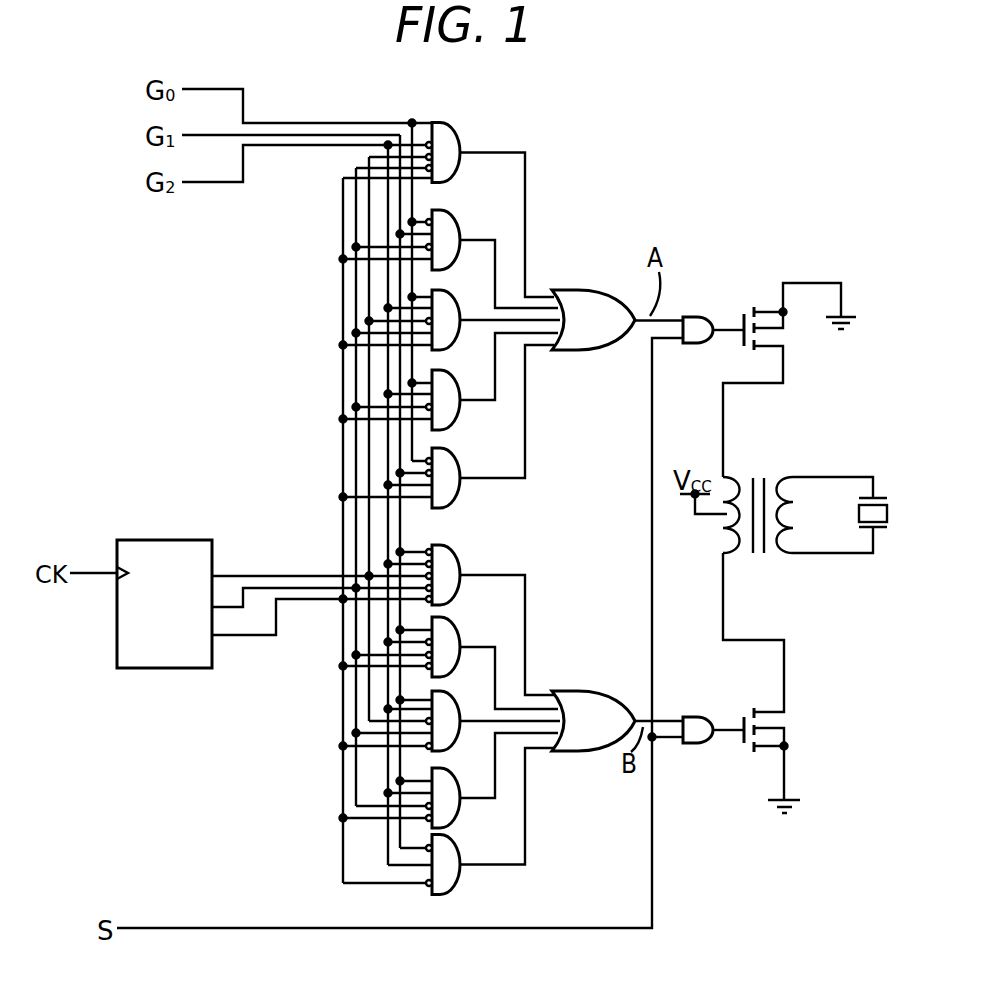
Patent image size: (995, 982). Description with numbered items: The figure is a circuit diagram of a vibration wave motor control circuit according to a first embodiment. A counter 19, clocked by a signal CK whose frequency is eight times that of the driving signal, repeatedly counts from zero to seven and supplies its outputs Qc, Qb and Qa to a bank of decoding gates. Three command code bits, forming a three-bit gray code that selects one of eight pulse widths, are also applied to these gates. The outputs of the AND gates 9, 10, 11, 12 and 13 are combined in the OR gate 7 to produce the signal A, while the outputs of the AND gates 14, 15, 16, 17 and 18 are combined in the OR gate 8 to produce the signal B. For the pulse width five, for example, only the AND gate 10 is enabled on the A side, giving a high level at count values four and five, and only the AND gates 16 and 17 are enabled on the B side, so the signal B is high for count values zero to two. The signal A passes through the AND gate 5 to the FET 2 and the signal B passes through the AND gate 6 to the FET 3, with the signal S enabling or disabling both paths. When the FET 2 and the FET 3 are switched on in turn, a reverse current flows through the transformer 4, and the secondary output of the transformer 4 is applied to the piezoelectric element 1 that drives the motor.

The piezoelectric element 1 is at (878, 497).
The FET 2 is at (745, 312).
The FET 3 is at (778, 720).
The transformer 4 is at (757, 480).
The AND gate 5 is at (697, 316).
The AND gate 6 is at (697, 715).
The OR gate 7 is at (585, 298).
The OR gate 8 is at (585, 700).
The AND gate 9 is at (446, 136).
The AND gate 10 is at (449, 226).
The AND gate 11 is at (449, 306).
The AND gate 12 is at (449, 386).
The AND gate 13 is at (449, 464).
The AND gate 14 is at (449, 561).
The AND gate 15 is at (449, 633).
The AND gate 16 is at (449, 707).
The AND gate 17 is at (449, 784).
The AND gate 18 is at (449, 858).
The counter 19 is at (155, 548).